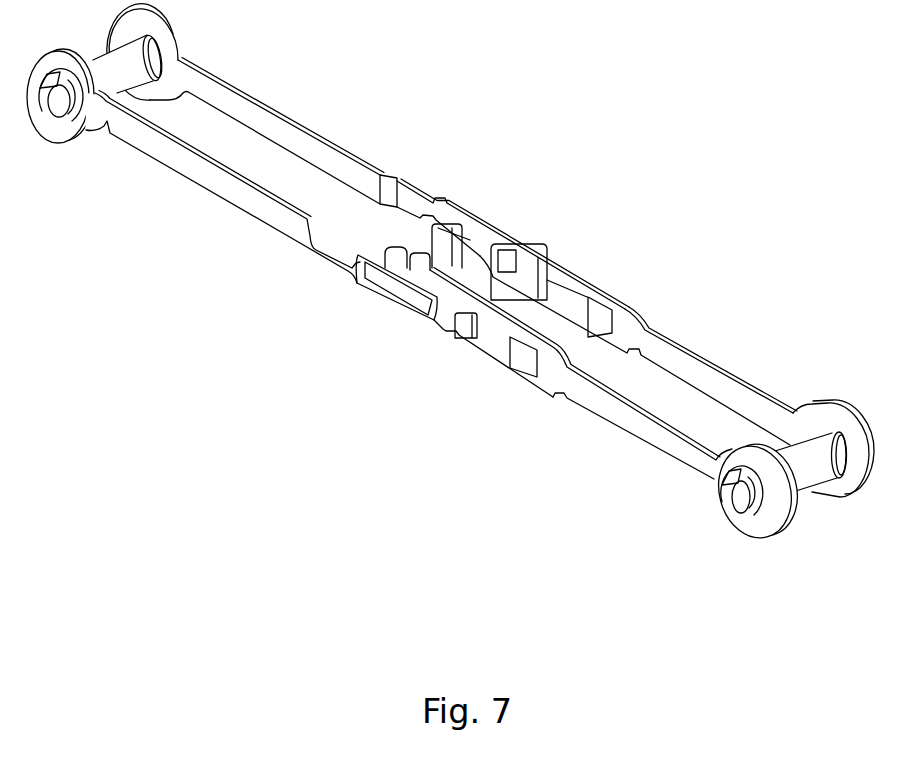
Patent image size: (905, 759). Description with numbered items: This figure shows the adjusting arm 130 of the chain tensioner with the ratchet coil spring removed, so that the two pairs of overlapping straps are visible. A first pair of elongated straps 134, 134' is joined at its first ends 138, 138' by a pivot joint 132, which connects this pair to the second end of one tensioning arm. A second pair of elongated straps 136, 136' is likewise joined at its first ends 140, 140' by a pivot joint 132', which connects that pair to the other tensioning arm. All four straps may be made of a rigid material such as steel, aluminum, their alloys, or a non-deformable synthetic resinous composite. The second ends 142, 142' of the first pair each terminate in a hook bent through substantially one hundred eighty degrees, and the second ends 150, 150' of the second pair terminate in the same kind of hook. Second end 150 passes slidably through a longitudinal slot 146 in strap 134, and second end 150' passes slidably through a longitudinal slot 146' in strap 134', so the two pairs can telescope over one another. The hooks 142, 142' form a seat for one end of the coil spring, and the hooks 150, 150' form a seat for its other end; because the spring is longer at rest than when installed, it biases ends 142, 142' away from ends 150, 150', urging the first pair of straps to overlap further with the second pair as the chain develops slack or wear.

The adjusting arm 130 is at (335, 391).
The pivot joint 132 is at (721, 522).
The pivot joint 132' is at (62, 143).
The elongated strap 134 is at (677, 376).
The elongated strap 134' is at (618, 407).
The elongated strap 136 is at (368, 156).
The elongated strap 136' is at (290, 223).
The first end of elongated strap 138 is at (818, 430).
The first end of elongated strap 138' is at (766, 528).
The first end of elongated strap 140 is at (193, 50).
The first end of elongated strap 140' is at (86, 133).
The second end of elongated strap 142 is at (458, 198).
The second end of elongated strap 142' is at (384, 241).
The longitudinal slot 146 is at (598, 341).
The longitudinal slot 146' is at (511, 390).
The second end of elongated strap 150 is at (533, 254).
The second end of elongated strap 150' is at (446, 360).